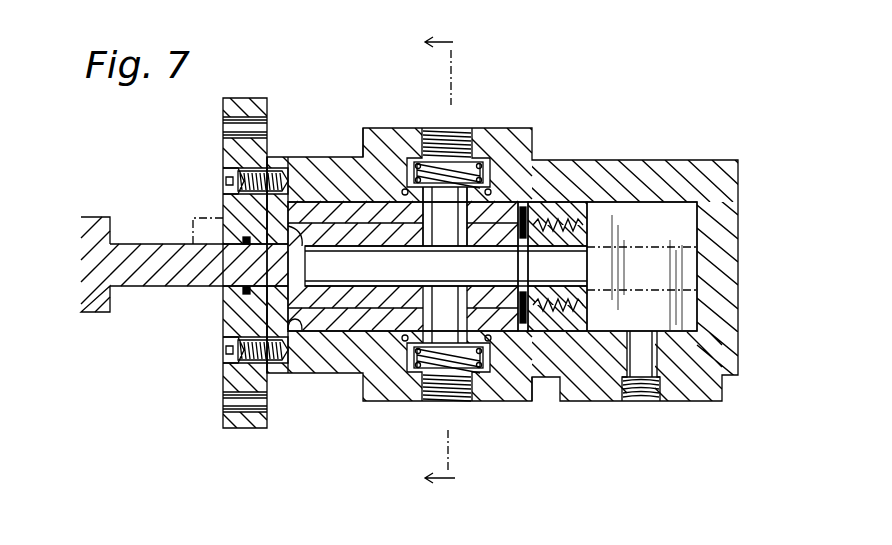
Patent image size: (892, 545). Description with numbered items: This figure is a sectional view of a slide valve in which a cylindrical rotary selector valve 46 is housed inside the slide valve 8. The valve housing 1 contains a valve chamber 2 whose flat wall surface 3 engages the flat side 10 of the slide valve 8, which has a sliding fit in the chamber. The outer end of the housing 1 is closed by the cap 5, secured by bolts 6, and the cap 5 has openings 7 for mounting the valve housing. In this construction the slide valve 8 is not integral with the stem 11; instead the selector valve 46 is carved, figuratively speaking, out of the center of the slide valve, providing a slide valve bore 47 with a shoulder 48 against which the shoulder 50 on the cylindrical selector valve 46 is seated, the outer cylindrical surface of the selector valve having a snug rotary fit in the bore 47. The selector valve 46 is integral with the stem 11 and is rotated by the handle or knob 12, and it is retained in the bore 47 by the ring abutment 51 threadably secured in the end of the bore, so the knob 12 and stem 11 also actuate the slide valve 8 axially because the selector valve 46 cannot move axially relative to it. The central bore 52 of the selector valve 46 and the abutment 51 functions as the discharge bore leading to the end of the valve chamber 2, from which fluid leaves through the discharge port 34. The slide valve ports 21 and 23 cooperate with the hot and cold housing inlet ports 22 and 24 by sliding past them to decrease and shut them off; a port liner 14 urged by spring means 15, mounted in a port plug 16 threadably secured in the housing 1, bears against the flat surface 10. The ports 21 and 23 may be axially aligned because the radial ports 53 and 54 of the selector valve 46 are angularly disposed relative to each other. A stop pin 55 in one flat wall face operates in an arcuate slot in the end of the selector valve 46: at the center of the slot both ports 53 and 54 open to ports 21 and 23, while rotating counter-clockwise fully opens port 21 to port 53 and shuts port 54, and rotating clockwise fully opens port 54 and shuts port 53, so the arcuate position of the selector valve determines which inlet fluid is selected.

The valve housing 1 is at (692, 160).
The valve chamber 2 is at (677, 222).
The flat face 3 is at (303, 330).
The cap 5 is at (230, 214).
The bolts 6 is at (226, 180).
The openings 7 is at (235, 128).
The slide valve 8 is at (586, 423).
The flat side 10 is at (318, 373).
The stem 11 is at (156, 289).
The handle or knob 12 is at (92, 313).
The port liner 14 is at (528, 200).
The spring means 15 is at (412, 160).
The port plug 16 is at (362, 140).
The slide valve port 21 is at (447, 213).
The hot water inlet port 22 is at (444, 157).
The slide valve port 23 is at (445, 345).
The cold water inlet port 24 is at (433, 360).
The discharge port 34 is at (647, 333).
The rotary selector valve 46 is at (353, 297).
The slide valve bore 47 is at (322, 222).
The shoulder 48 is at (305, 257).
The shoulder 50 is at (220, 312).
The ring abutment 51 is at (563, 223).
The central bore 52 is at (523, 250).
The radial port 53 is at (452, 235).
The radial port 54 is at (450, 297).
The stop pin 55 is at (537, 205).